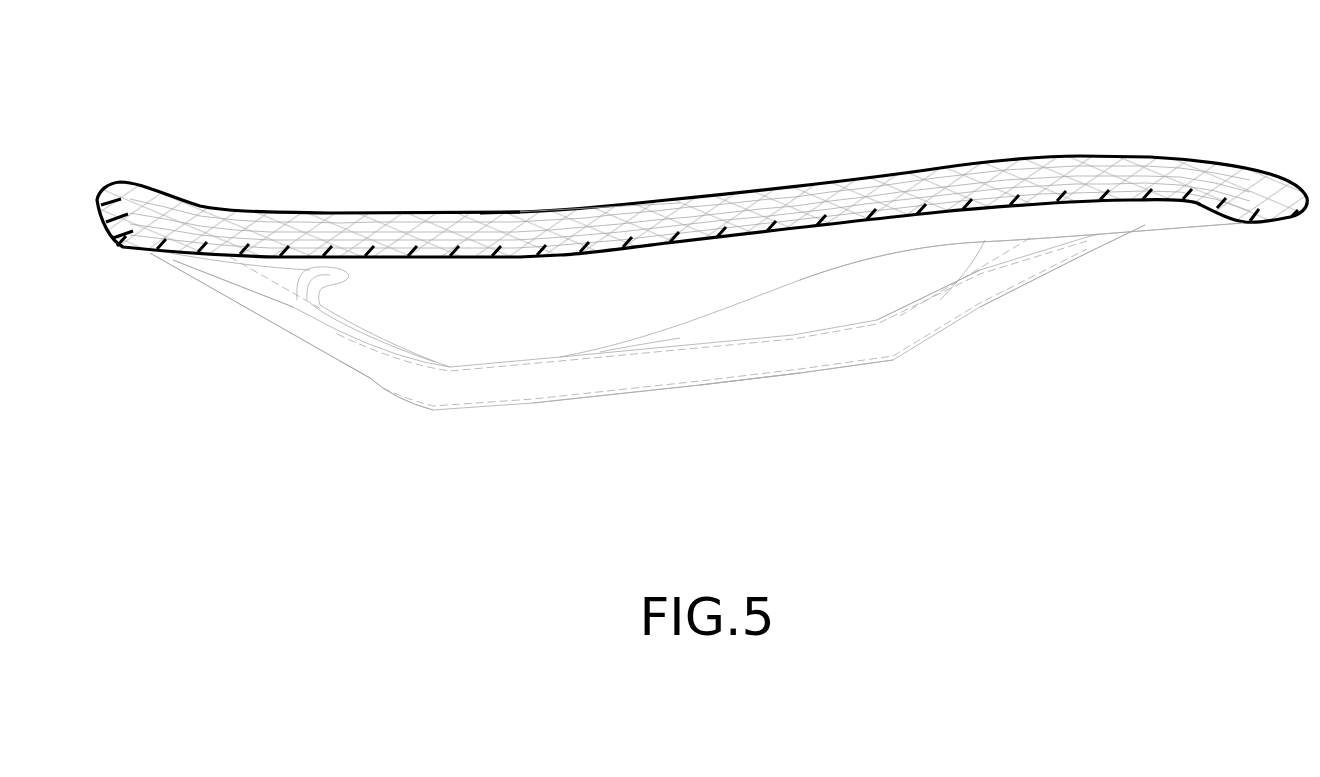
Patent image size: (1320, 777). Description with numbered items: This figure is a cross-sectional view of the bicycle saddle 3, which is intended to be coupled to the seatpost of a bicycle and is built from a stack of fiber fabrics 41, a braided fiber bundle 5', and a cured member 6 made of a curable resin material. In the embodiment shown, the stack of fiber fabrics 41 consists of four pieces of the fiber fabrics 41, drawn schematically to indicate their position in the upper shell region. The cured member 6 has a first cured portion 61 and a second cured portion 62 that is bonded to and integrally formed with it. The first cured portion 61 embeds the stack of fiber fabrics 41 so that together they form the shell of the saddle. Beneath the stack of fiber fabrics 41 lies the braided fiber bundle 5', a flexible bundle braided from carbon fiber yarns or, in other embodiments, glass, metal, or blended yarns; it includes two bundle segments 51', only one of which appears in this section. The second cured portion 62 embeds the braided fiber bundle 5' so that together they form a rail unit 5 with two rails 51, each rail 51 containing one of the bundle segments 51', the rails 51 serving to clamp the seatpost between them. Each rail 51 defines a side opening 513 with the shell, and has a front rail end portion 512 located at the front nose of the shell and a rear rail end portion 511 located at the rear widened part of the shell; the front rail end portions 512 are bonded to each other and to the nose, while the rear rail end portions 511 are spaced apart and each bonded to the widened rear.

The bicycle saddle 3 is at (895, 118).
The fiber fabrics 41 is at (1110, 180).
The rail unit 5 is at (706, 377).
The braided fiber bundle 5' is at (796, 428).
The rails 51 is at (666, 425).
The bundle segments 51' is at (374, 421).
The rear rail end portion 511 is at (253, 290).
The front rail end portion 512 is at (1052, 253).
The side opening 513 is at (922, 283).
The cured member 6 is at (508, 112).
The first cured portion 61 is at (497, 215).
The second cured portion 62 is at (645, 350).